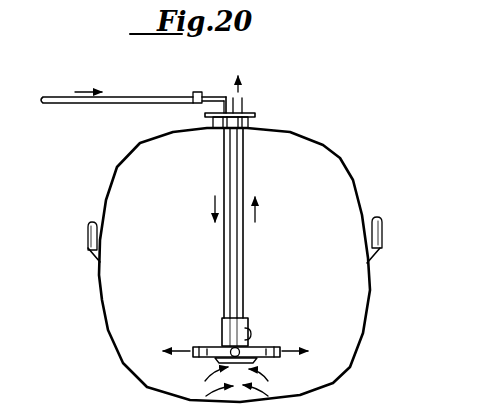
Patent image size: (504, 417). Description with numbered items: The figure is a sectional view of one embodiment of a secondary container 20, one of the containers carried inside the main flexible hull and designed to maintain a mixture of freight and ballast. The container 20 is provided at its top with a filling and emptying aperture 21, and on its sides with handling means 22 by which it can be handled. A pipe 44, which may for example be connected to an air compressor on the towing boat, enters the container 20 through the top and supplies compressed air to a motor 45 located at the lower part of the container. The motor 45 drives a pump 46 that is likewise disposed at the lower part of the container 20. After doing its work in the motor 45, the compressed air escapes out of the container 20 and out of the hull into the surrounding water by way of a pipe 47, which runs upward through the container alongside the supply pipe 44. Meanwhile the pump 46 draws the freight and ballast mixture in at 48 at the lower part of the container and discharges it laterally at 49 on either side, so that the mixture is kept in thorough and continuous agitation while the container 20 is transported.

The secondary container 20 is at (339, 160).
The filling and emptying aperture 21 is at (256, 118).
The handling means 22 is at (88, 225).
The pipe 44 is at (72, 104).
The motor 45 is at (250, 333).
The pump 46 is at (208, 347).
The pipe 47 is at (244, 179).
The pump intake 48 is at (218, 362).
The lateral discharge 49 is at (193, 357).